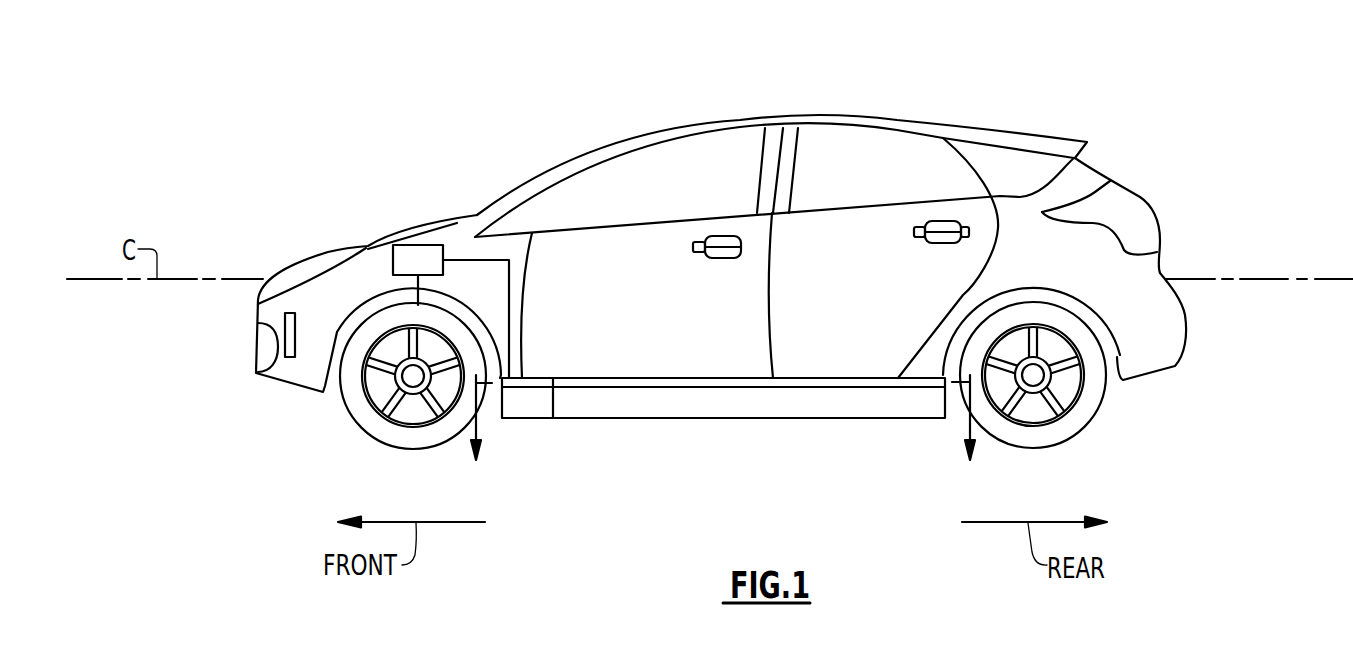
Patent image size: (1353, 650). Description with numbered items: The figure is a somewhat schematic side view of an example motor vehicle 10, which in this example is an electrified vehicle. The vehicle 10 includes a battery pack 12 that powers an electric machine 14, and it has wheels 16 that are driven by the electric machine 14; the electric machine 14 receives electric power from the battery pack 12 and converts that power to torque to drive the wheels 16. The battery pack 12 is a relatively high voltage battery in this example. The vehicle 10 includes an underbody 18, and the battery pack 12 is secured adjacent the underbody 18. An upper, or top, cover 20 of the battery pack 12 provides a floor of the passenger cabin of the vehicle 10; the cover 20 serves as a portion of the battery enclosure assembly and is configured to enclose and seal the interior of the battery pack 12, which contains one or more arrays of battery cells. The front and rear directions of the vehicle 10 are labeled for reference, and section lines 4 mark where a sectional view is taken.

The motor vehicle 10 is at (958, 75).
The battery pack 12 is at (860, 418).
The electric machine 14 is at (435, 270).
The wheels 16 is at (356, 424).
The underbody 18 is at (553, 418).
The cover 20 is at (843, 379).
The section line 4 is at (723, 435).